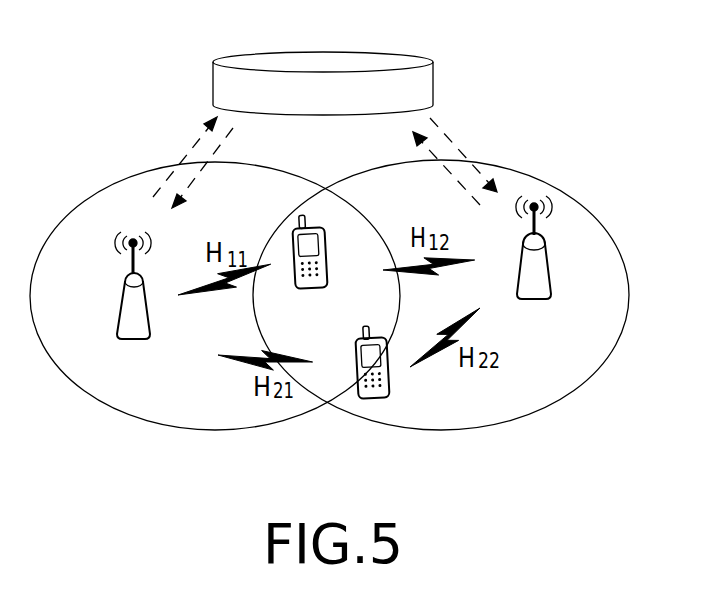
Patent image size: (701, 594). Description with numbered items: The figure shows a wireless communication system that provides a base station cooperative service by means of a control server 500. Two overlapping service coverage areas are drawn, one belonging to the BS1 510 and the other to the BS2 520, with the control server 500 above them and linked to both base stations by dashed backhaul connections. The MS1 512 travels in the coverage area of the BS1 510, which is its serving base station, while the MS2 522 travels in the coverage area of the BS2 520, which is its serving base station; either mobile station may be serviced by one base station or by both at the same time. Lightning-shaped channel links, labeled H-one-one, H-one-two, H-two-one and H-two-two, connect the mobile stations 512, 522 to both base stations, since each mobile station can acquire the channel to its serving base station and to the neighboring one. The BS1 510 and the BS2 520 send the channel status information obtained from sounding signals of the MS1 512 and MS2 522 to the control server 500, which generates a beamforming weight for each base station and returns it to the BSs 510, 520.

The control server 500 is at (324, 51).
The BS1 510 is at (141, 300).
The MS1 512 is at (324, 266).
The BS2 520 is at (541, 268).
The MS2 522 is at (425, 369).